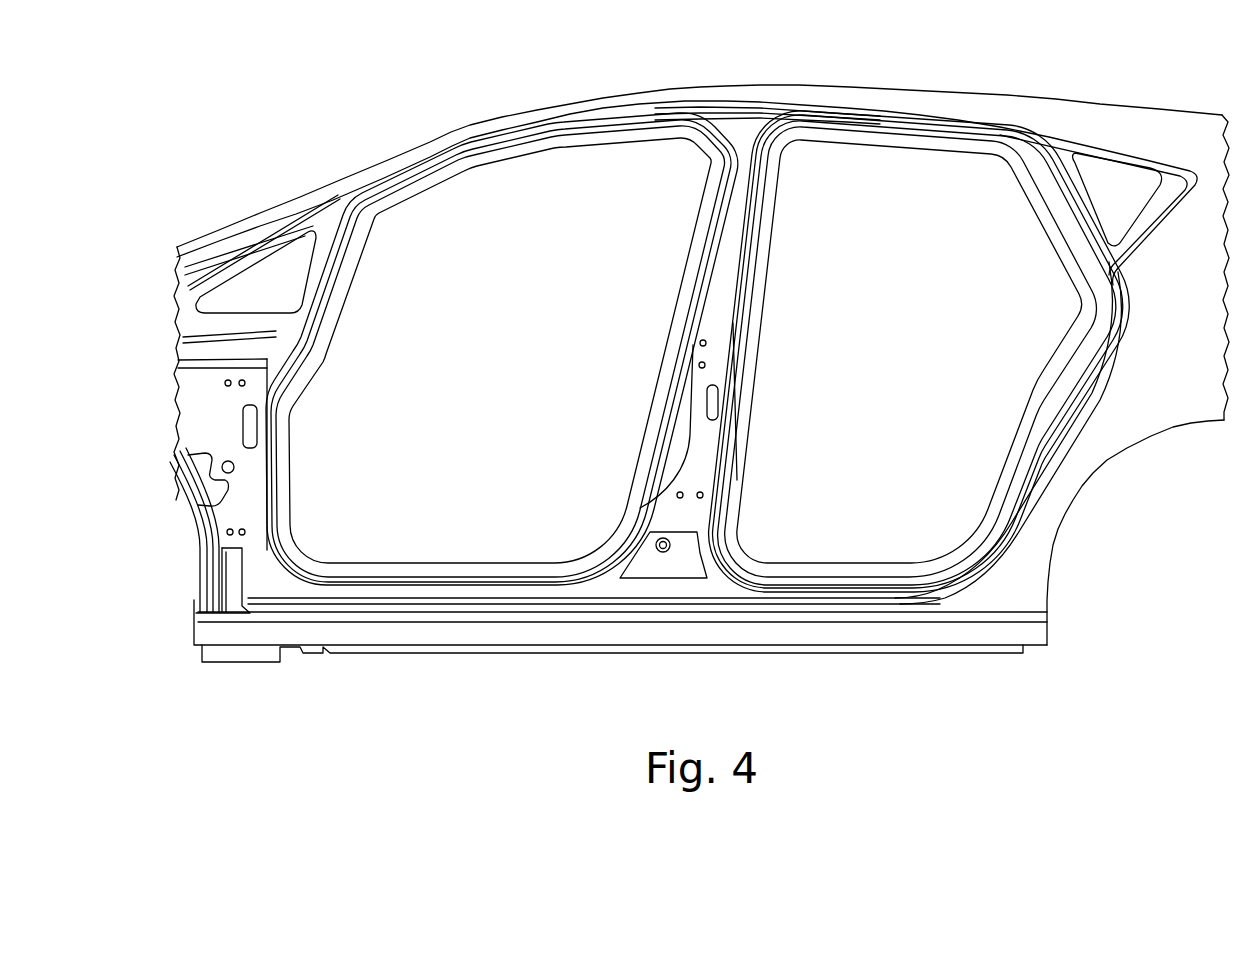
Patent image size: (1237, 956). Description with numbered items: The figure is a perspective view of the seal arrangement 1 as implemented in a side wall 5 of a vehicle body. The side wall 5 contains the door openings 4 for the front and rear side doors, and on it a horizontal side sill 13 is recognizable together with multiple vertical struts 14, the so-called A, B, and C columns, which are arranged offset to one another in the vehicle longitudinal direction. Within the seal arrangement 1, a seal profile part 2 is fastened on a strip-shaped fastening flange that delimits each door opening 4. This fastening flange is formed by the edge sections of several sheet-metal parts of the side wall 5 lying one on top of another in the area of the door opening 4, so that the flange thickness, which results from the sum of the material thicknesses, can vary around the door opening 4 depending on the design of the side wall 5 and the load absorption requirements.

The seal arrangement 1 is at (442, 196).
The seal profile part 2 is at (613, 144).
The door opening 4 is at (487, 459).
The side wall 5 is at (318, 195).
The side sill 13 is at (233, 640).
The vertical struts 14 is at (325, 290).